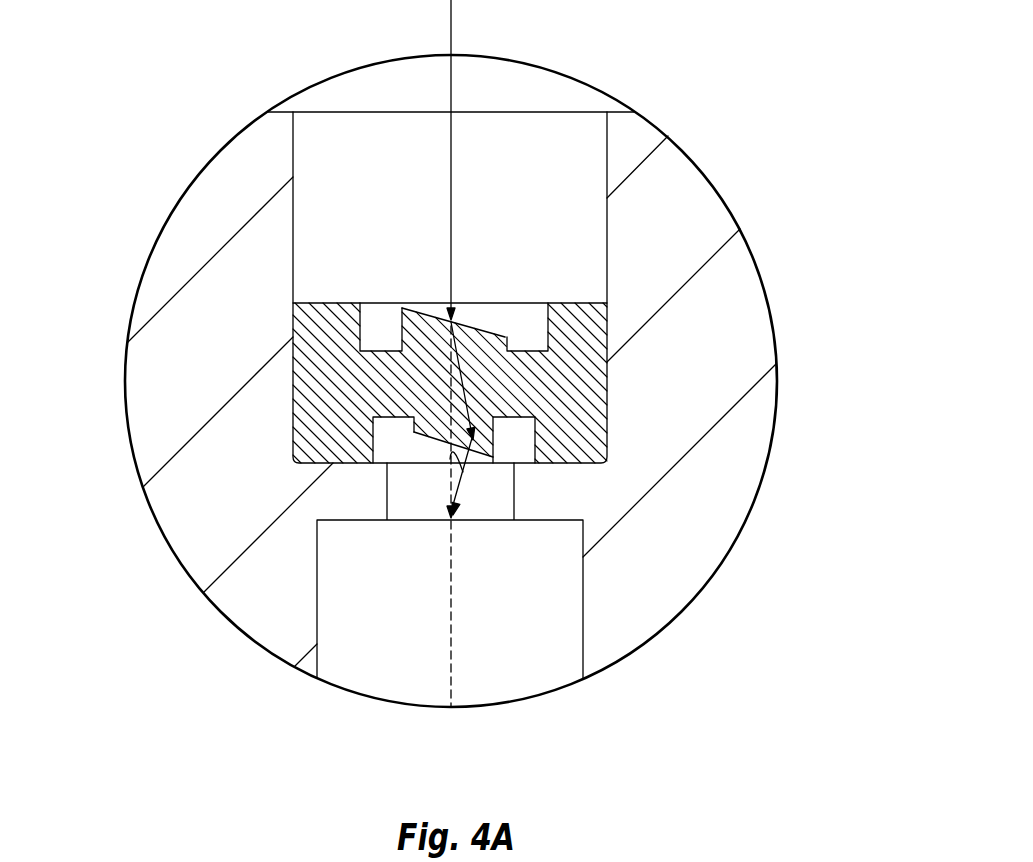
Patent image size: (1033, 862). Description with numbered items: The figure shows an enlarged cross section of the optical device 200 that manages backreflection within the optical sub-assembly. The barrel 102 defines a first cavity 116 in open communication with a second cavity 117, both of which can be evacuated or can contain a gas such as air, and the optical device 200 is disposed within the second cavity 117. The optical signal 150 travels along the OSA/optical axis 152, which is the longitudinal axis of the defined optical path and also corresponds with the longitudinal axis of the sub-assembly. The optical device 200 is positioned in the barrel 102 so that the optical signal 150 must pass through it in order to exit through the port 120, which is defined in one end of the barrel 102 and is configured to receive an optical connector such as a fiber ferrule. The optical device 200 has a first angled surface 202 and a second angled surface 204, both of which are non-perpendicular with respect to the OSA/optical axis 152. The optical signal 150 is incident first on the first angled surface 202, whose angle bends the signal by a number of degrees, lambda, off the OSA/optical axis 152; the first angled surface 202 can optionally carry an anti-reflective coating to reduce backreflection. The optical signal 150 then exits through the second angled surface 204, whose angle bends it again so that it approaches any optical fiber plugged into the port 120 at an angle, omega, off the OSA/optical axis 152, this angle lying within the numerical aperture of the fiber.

The barrel 102 is at (146, 396).
The first cavity 116 is at (507, 90).
The second cavity 117 is at (583, 125).
The port 120 is at (413, 678).
The optical signal 150 is at (452, 27).
The OSA/optical axis 152 is at (447, 343).
The optical device 200 is at (581, 302).
The first angled surface 202 is at (487, 332).
The second angled surface 204 is at (435, 438).